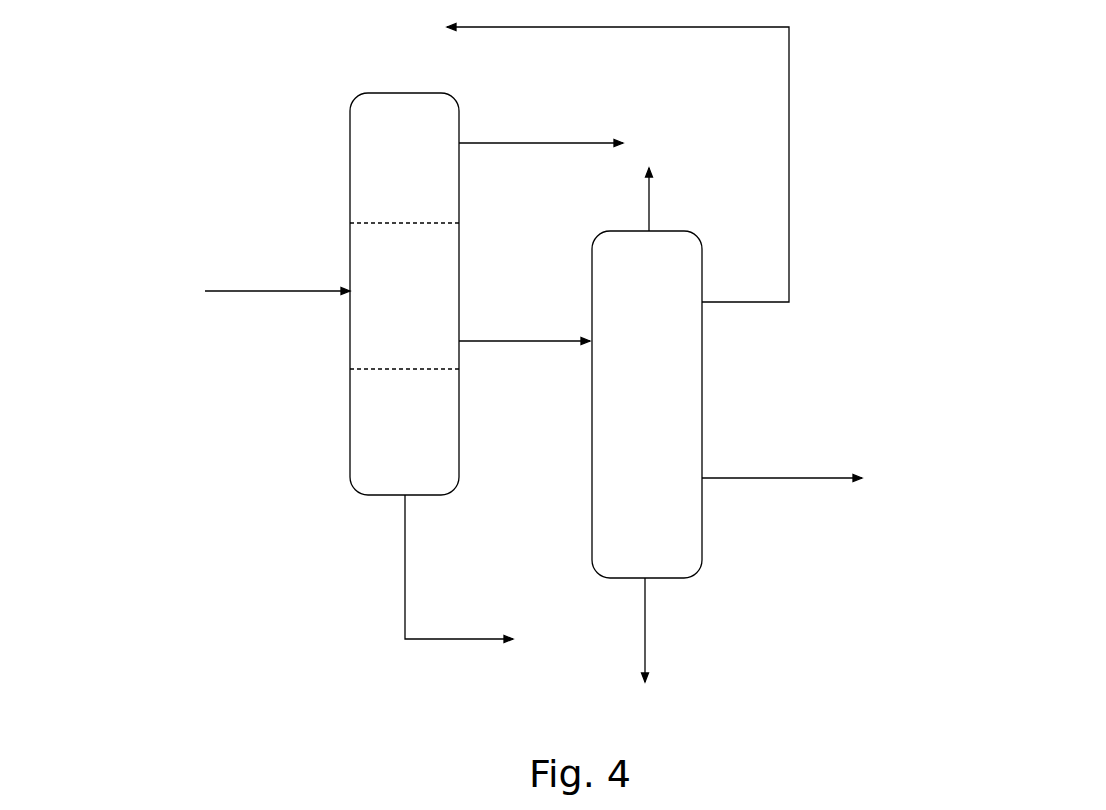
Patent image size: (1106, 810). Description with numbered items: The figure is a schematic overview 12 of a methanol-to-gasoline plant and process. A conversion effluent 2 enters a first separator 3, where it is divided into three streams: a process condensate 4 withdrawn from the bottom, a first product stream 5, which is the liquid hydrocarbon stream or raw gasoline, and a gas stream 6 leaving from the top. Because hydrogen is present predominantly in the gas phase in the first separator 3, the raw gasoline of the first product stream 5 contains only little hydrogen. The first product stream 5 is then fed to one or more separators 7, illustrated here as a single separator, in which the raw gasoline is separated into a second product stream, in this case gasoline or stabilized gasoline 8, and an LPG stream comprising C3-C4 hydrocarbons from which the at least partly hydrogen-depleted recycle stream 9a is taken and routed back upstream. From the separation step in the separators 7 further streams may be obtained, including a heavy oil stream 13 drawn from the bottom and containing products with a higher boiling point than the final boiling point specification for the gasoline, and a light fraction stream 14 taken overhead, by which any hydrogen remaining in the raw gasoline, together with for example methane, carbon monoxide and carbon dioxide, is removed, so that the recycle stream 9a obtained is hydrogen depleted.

The conversion effluent 2 is at (258, 291).
The first separator 3 is at (355, 102).
The process condensate 4 is at (445, 640).
The first product stream 5 is at (509, 341).
The gas stream 6 is at (533, 143).
The separators 7 is at (668, 580).
The stabilized gasoline 8 is at (758, 480).
The recycle stream 9a is at (789, 170).
The schematic overview 12 is at (921, 119).
The heavy oil stream 13 is at (645, 620).
The light fraction stream 14 is at (650, 200).